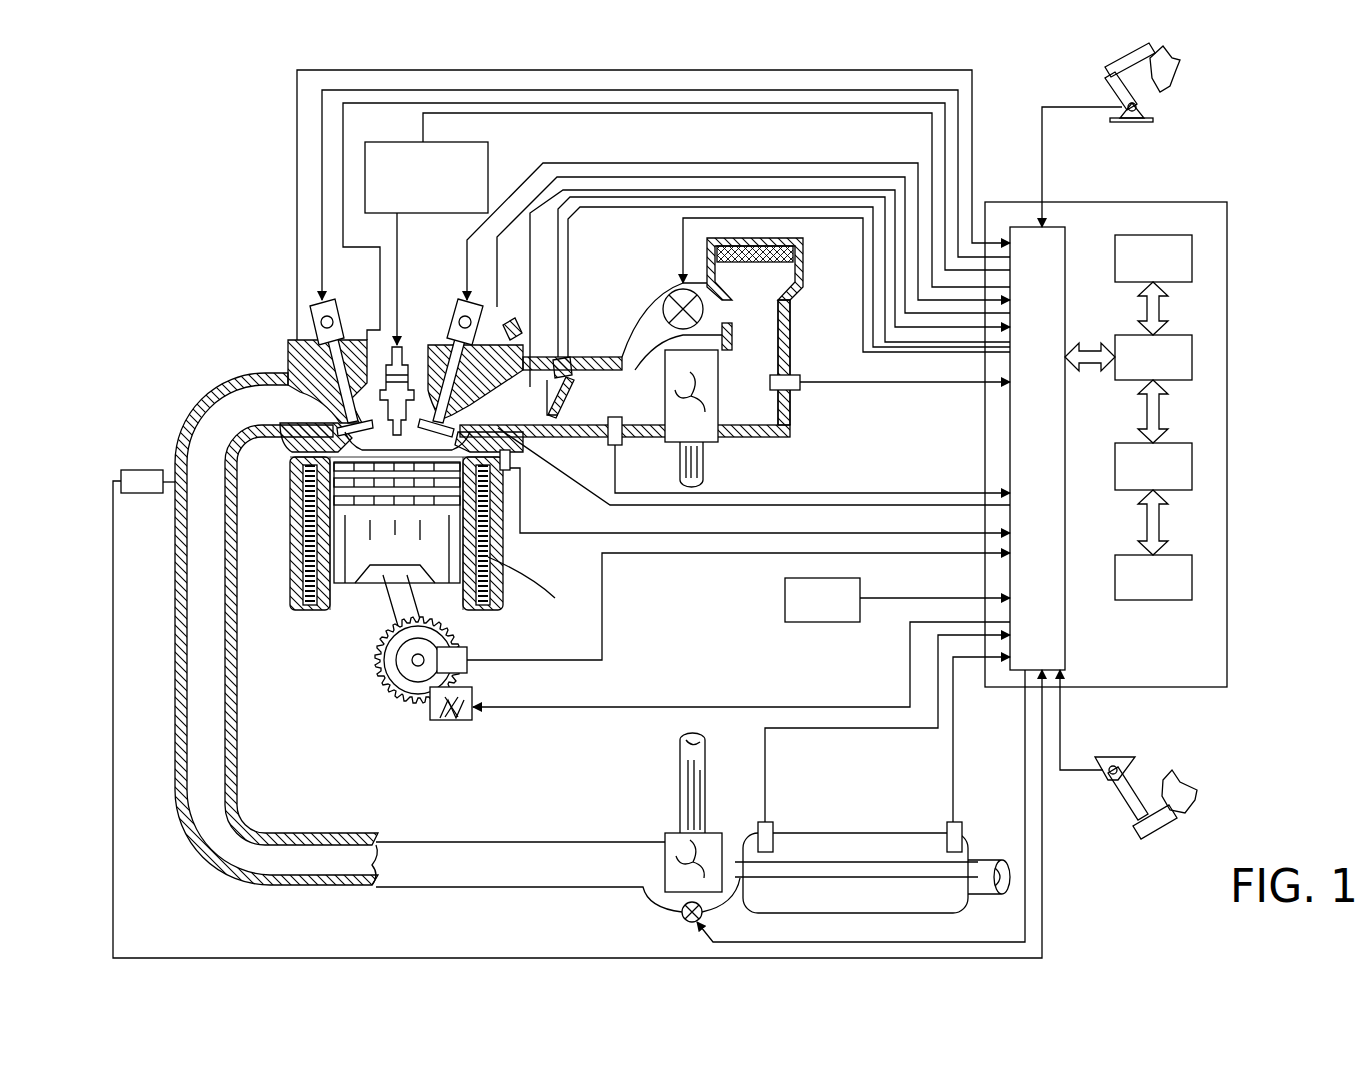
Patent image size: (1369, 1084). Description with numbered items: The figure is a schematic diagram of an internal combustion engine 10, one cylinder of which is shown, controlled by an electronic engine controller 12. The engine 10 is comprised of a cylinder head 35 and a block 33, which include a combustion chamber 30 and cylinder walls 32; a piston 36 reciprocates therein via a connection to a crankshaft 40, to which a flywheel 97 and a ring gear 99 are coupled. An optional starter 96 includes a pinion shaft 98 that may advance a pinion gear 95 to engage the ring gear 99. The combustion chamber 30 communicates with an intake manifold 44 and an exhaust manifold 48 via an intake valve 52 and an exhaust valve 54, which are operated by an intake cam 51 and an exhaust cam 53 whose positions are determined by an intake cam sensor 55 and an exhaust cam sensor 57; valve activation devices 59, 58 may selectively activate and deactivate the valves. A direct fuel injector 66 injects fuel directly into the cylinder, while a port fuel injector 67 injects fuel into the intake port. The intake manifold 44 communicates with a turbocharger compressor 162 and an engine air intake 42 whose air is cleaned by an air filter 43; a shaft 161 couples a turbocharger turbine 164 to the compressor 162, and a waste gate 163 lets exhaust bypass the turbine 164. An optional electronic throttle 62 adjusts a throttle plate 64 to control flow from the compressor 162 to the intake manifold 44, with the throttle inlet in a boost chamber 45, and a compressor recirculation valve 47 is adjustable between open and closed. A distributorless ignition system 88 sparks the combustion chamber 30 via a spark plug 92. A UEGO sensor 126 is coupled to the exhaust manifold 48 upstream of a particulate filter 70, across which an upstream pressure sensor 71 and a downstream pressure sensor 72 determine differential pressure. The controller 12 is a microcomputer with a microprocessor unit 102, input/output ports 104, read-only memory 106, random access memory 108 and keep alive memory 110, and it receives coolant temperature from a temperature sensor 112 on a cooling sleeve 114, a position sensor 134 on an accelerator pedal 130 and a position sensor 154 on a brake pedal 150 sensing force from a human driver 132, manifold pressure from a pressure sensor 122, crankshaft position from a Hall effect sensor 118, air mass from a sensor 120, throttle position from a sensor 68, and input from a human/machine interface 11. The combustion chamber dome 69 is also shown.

The internal combustion engine 10 is at (218, 288).
The human/machine interface 11 is at (897, 600).
The electronic engine controller 12 is at (1228, 204).
The combustion chamber 30 is at (303, 556).
The cylinder walls 32 is at (335, 598).
The block 33 is at (290, 488).
The cylinder head 35 is at (290, 340).
The piston 36 is at (388, 560).
The crankshaft 40 is at (402, 682).
The engine air intake 42 is at (622, 262).
The air filter 43 is at (768, 262).
The intake manifold 44 is at (534, 409).
The boost chamber 45 is at (639, 409).
The compressor recirculation valve 47 is at (670, 296).
The exhaust manifold 48 is at (269, 416).
The intake cam 51 is at (455, 318).
The intake valve 52 is at (440, 412).
The exhaust cam 53 is at (330, 318).
The exhaust valve 54 is at (350, 418).
The intake cam sensor 55 is at (478, 320).
The exhaust cam sensor 57 is at (315, 328).
The valve activation device 58 is at (335, 325).
The valve activation device 59 is at (458, 325).
The electronic throttle 62 is at (568, 392).
The throttle plate 64 is at (565, 405).
The direct fuel injector 66 is at (510, 475).
The port fuel injector 67 is at (511, 332).
The throttle position sensor 68 is at (563, 358).
The combustion chamber dome 69 is at (398, 436).
The particulate filter 70 is at (790, 833).
The upstream pressure sensor 71 is at (768, 822).
The downstream pressure sensor 72 is at (950, 822).
The distributorless ignition system 88 is at (488, 152).
The spark plug 92 is at (400, 350).
The pinion gear 95 is at (456, 720).
The starter 96 is at (466, 720).
The flywheel 97 is at (392, 660).
The pinion shaft 98 is at (440, 720).
The ring gear 99 is at (412, 695).
The microprocessor unit 102 is at (1193, 352).
The input/output ports 104 is at (1068, 230).
The read-only memory 106 is at (1193, 252).
The random access memory 108 is at (1193, 462).
The keep alive memory 110 is at (1193, 572).
The temperature sensor 112 is at (530, 490).
The cooling sleeve 114 is at (540, 594).
The Hall effect sensor 118 is at (467, 650).
The air mass sensor 120 is at (800, 377).
The pressure sensor 122 is at (608, 440).
The Universal Exhaust Gas Oxygen sensor 126 is at (121, 474).
The accelerator pedal 130 is at (1110, 88).
The human driver 132 is at (1175, 62).
The position sensor 134 is at (1150, 108).
The brake pedal 150 is at (1138, 820).
The position sensor 154 is at (1100, 762).
The shaft 161 is at (680, 470).
The turbocharger compressor 162 is at (703, 430).
The waste gate 163 is at (685, 921).
The turbocharger turbine 164 is at (665, 832).